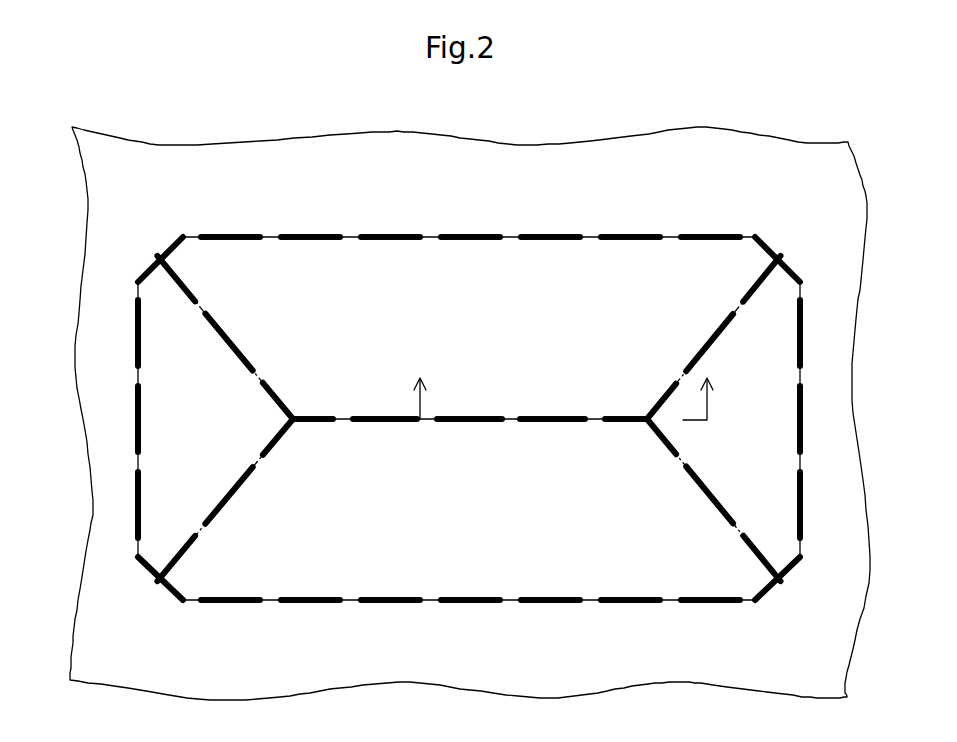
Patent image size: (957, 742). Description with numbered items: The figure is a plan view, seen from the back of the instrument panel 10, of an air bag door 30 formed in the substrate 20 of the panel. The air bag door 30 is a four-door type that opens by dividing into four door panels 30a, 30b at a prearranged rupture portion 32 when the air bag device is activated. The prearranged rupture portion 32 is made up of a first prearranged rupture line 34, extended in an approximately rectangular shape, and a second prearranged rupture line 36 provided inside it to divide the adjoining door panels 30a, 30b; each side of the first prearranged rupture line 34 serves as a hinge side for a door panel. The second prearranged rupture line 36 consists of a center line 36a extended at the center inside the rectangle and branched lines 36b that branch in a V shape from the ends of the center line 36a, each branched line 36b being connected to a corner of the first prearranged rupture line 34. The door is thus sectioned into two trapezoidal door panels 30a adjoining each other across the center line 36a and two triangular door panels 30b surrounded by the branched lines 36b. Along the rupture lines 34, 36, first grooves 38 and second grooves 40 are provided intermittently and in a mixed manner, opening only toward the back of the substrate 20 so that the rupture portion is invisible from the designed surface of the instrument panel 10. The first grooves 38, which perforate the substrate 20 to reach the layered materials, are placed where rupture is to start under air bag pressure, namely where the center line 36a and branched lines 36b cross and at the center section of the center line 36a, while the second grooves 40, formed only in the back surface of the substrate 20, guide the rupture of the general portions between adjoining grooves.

The instrument panel 10 is at (793, 160).
The substrate 20 is at (623, 165).
The air bag door 30 is at (487, 233).
The trapezoidal door panel 30a is at (535, 290).
The triangular door panel 30b is at (170, 408).
The prearranged rupture portion 32 is at (236, 233).
The first prearranged rupture line 34 is at (352, 237).
The second prearranged rupture line 36 is at (468, 420).
The center line 36a is at (340, 419).
The branched line 36b is at (200, 304).
The first groove 38 is at (312, 419).
The second groove 40 is at (160, 256).